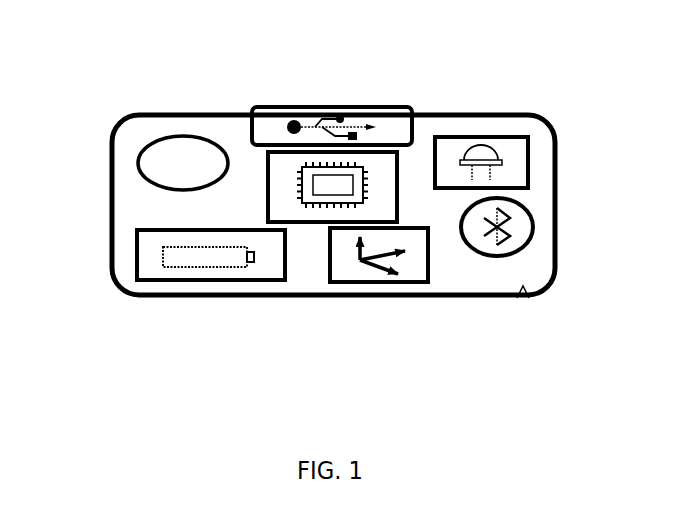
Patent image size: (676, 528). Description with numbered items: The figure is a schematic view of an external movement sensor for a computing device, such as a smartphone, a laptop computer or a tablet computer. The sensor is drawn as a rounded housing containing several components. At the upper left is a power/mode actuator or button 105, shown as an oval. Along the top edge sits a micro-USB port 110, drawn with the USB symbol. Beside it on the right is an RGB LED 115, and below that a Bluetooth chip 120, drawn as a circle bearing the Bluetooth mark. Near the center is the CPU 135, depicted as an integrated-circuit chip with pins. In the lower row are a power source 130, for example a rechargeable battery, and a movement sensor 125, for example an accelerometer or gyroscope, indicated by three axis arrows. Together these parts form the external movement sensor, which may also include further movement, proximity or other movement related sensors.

The power/mode actuator or button 105 is at (162, 158).
The micro-USB port 110 is at (332, 113).
The RGB LED 115 is at (490, 128).
The Bluetooth chip 120 is at (553, 227).
The movement sensor 125 is at (465, 286).
The power source 130 is at (211, 308).
The CPU 135 is at (209, 187).